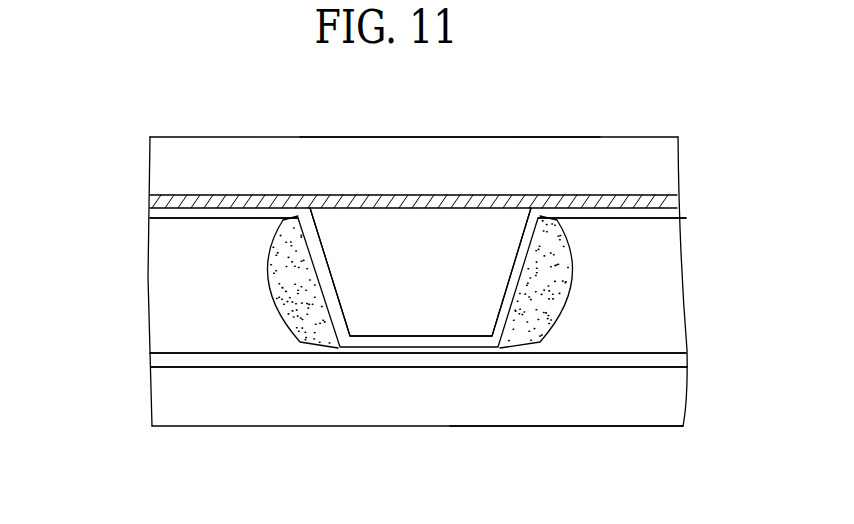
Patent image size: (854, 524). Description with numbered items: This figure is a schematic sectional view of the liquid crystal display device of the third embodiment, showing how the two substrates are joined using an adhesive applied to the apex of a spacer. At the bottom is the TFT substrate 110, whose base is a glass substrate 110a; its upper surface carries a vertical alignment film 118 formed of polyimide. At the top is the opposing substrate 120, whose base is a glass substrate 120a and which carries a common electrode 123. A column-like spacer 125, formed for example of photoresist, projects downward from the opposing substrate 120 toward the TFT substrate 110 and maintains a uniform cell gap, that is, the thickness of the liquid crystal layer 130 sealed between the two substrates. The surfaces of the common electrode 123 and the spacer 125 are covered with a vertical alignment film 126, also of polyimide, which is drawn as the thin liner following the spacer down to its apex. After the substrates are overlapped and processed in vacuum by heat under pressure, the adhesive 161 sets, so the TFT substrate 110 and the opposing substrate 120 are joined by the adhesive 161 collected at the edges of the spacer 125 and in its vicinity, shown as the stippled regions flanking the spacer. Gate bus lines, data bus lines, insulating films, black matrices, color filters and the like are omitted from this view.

The TFT substrate 110 is at (138, 350).
The glass substrate 110a is at (570, 403).
The vertical alignment film 118 is at (615, 360).
The opposing substrate 120 is at (138, 138).
The glass substrate 120a is at (605, 146).
The common electrode 123 is at (678, 203).
The spacer 125 is at (372, 222).
The vertical alignment film 126 is at (607, 218).
The liquid crystal layer 130 is at (153, 279).
The adhesive 161 is at (272, 292).